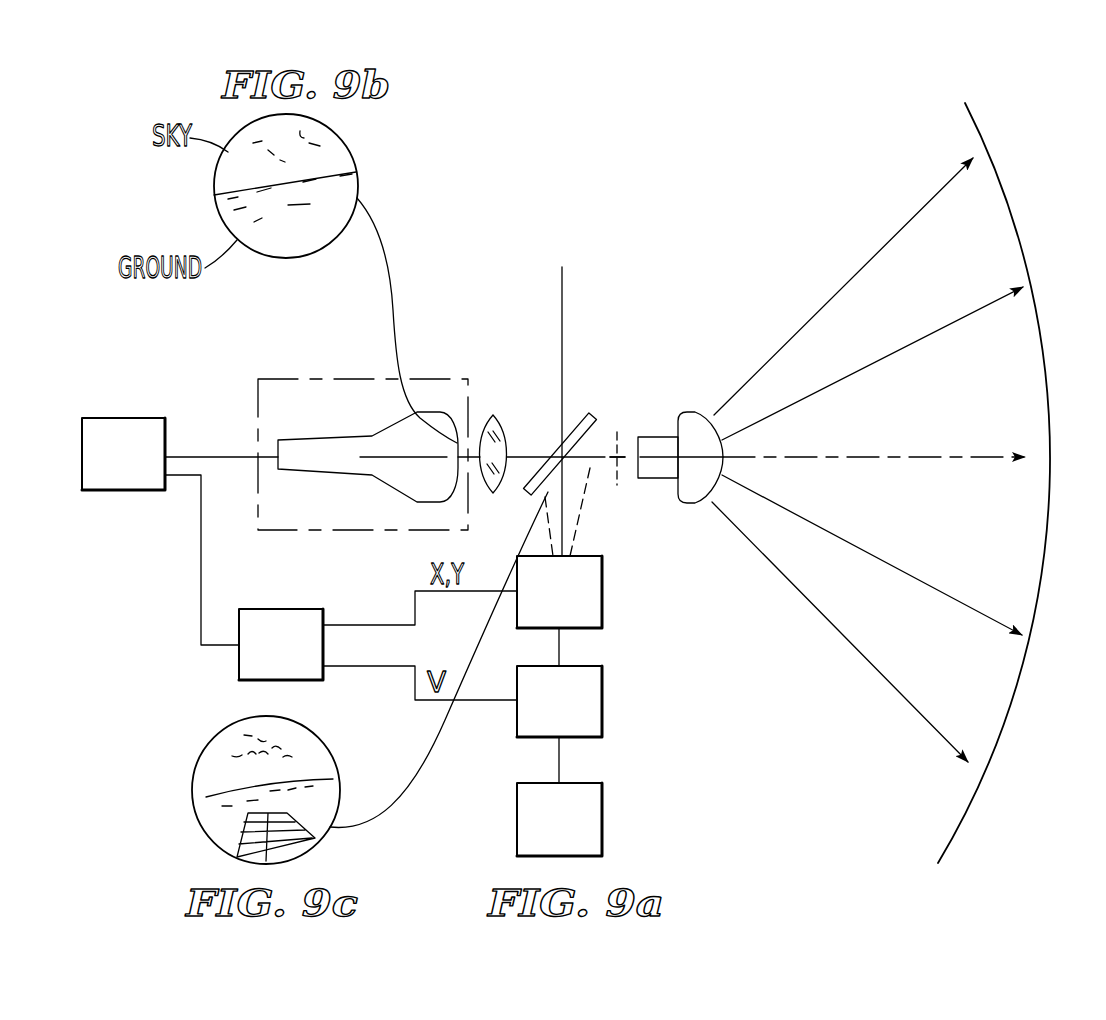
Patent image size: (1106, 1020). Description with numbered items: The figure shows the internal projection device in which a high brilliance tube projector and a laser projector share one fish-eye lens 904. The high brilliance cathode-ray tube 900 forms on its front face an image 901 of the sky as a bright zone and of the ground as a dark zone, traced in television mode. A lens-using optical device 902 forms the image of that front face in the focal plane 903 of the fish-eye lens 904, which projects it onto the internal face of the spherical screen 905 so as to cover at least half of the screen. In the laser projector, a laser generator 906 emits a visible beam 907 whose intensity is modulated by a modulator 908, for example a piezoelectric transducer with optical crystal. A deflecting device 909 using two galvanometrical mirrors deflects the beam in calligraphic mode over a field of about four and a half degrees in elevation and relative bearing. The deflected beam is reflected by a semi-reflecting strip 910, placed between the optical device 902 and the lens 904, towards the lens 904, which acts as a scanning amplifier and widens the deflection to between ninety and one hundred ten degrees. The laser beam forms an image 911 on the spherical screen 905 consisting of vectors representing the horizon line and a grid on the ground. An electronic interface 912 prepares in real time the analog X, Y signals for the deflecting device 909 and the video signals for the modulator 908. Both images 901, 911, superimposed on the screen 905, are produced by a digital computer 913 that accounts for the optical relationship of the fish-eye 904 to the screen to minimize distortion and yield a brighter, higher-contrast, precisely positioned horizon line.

In FIG. 9A, the high brilliance cathode-ray tube 900 is at (283, 372).
In FIG. 9A, the image 901 is at (390, 246).
In FIG. 9A, the lens-using optical device 902 is at (497, 424).
In FIG. 9A, the focal plane 903 is at (622, 440).
In FIG. 9A, the fish-eye lens 904 is at (697, 494).
In FIG. 9A, the spherical screen 905 is at (1049, 425).
In FIG. 9A, the laser generator 906 is at (595, 822).
In FIG. 9A, the visible beam 907 is at (559, 758).
In FIG. 9A, the modulator 908 is at (595, 706).
In FIG. 9A, the deflecting device 909 is at (602, 593).
In FIG. 9A, the semi-reflecting strip 910 is at (550, 475).
In FIG. 9C, the image 911 is at (192, 780).
In FIG. 9A, the electronic interface 912 is at (281, 612).
In FIG. 9A, the digital computer 913 is at (122, 480).